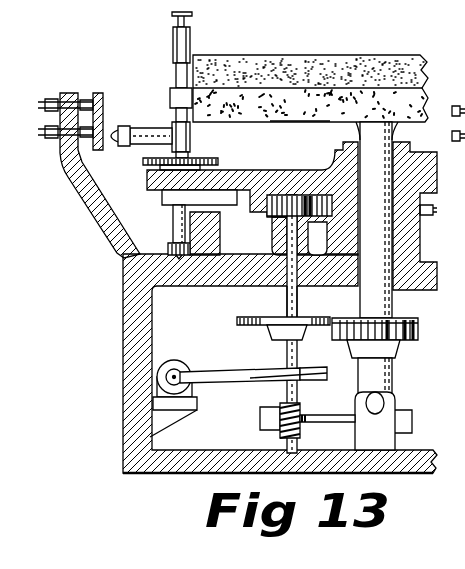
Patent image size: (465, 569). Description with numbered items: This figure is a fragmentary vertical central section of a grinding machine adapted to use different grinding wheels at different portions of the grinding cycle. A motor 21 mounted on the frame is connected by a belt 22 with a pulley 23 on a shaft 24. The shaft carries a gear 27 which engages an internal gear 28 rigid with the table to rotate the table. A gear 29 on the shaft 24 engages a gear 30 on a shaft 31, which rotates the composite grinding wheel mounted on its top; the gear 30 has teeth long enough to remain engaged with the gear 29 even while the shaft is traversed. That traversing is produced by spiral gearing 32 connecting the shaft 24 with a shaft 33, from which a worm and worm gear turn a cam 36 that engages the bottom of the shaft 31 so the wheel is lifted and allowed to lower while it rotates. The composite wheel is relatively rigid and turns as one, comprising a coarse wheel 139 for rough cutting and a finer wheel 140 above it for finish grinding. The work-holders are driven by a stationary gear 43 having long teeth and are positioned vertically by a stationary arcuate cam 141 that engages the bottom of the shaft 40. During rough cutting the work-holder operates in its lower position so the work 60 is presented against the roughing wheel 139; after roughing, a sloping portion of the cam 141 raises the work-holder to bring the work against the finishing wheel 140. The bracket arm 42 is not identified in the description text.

The finer wheel 140 is at (337, 65).
The coarse wheel 139 is at (277, 119).
The work 60 is at (172, 96).
The gear 27 is at (286, 197).
The internal gear 28 is at (299, 217).
The shaft 31 is at (377, 220).
The gear 30 is at (410, 322).
The cam 36 is at (380, 405).
The gear 29 is at (318, 319).
The shaft 24 is at (297, 297).
The motor 21 is at (181, 361).
The belt 22 is at (223, 383).
The pulley 23 is at (261, 379).
The spiral gearing 32 is at (300, 411).
The shaft 33 is at (321, 425).
The shaft 40 is at (173, 222).
The stationary arcuate cam 141 is at (181, 259).
The bracket arm 42 is at (168, 247).
The stationary gear 43 is at (195, 228).